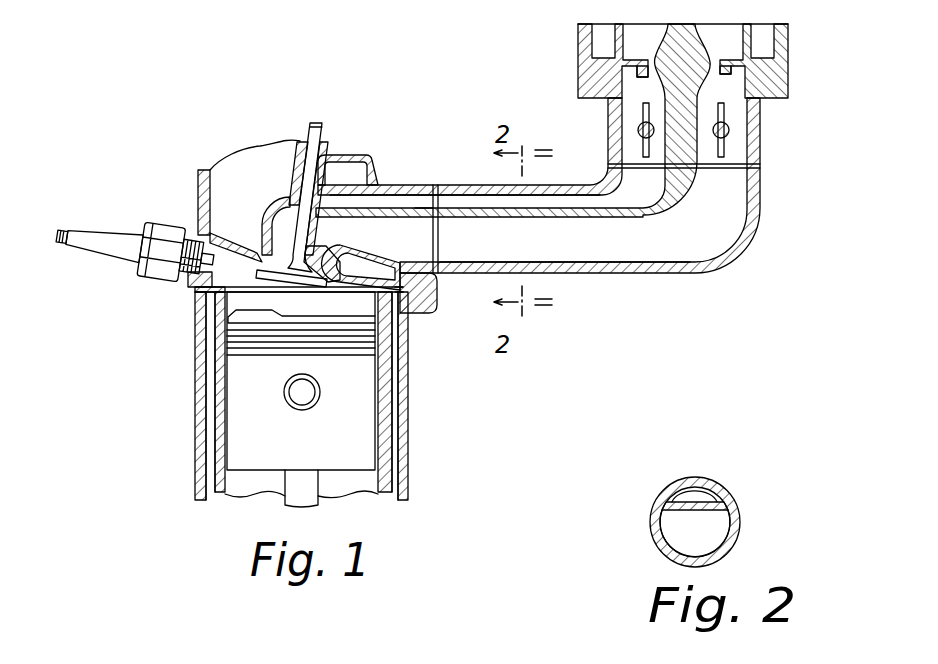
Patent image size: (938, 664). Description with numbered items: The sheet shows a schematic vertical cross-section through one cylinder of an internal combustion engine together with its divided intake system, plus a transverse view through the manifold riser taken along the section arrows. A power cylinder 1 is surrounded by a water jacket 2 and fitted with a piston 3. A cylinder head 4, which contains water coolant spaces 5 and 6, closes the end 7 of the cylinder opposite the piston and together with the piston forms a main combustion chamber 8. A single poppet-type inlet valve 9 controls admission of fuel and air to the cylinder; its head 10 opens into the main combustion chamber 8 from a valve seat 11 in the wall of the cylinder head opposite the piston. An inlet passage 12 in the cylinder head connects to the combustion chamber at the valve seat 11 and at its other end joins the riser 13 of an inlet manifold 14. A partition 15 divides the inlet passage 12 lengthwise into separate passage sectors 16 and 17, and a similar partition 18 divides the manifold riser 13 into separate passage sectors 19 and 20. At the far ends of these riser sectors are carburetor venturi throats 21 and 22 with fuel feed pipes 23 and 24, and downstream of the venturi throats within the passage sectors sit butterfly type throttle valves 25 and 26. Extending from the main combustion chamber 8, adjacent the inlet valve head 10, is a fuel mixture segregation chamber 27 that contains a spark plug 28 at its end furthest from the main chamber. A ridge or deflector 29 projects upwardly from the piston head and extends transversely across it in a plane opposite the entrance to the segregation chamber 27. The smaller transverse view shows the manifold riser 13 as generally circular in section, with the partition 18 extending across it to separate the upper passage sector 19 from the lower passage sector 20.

In FIG. 1, the power cylinder 1 is at (230, 391).
In FIG. 1, the water jacket 2 is at (200, 438).
In FIG. 1, the piston 3 is at (353, 371).
In FIG. 1, the cylinder head 4 is at (203, 180).
In FIG. 1, the water coolant space 5 is at (350, 172).
In FIG. 1, the water coolant space 6 is at (407, 284).
In FIG. 1, the end of the cylinder 7 is at (207, 290).
In FIG. 1, the main combustion chamber 8 is at (347, 277).
In FIG. 1, the inlet valve 9 is at (316, 123).
In FIG. 1, the head of the inlet valve 10 is at (290, 282).
In FIG. 1, the valve seat 11 is at (322, 272).
In FIG. 1, the inlet passage 12 is at (430, 187).
In FIG. 1, the riser 13 is at (573, 188).
In FIG. 2, the riser 13 is at (733, 530).
In FIG. 1, the inlet manifold 14 is at (757, 199).
In FIG. 1, the partition 15 is at (418, 216).
In FIG. 1, the passage sector 16 is at (392, 202).
In FIG. 1, the passage sector 17 is at (408, 245).
In FIG. 1, the partition 18 is at (618, 212).
In FIG. 2, the partition 18 is at (703, 502).
In FIG. 1, the passage sector 19 is at (557, 204).
In FIG. 2, the passage sector 19 is at (690, 494).
In FIG. 1, the passage sector 20 is at (607, 247).
In FIG. 2, the passage sector 20 is at (690, 532).
In FIG. 1, the carburetor venturi throat 21 is at (623, 40).
In FIG. 1, the carburetor venturi throat 22 is at (707, 50).
In FIG. 1, the fuel feed pipe 23 is at (637, 74).
In FIG. 1, the fuel feed pipe 24 is at (728, 72).
In FIG. 1, the butterfly type throttle valve 25 is at (648, 157).
In FIG. 1, the butterfly type throttle valve 26 is at (723, 110).
In FIG. 1, the fuel mixture segregation chamber 27 is at (222, 250).
In FIG. 1, the spark plug 28 is at (108, 257).
In FIG. 1, the ridge or deflector 29 is at (243, 316).